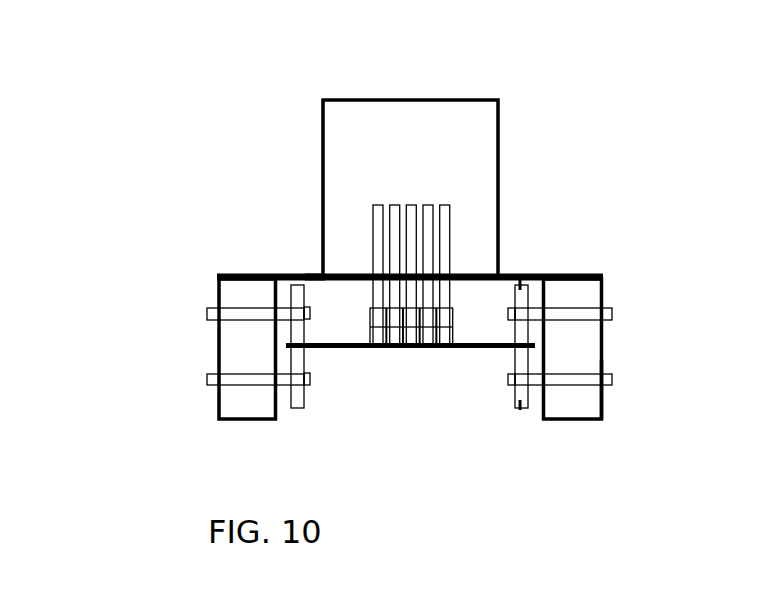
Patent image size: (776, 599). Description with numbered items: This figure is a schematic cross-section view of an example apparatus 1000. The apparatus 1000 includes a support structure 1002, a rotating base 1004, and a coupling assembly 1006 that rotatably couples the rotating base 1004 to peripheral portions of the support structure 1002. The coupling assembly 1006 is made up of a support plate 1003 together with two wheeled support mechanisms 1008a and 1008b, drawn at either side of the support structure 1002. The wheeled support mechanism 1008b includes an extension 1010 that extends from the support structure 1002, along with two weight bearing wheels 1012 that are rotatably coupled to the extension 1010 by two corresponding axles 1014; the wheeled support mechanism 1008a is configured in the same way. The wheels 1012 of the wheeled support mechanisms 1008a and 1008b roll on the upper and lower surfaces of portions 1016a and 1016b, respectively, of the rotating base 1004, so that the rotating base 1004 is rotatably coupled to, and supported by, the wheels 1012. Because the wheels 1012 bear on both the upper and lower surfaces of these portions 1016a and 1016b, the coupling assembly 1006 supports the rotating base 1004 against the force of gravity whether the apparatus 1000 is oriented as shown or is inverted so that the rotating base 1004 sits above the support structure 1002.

The apparatus 1000 is at (285, 72).
The support structure 1002 is at (438, 100).
The support plate 1003 is at (315, 277).
The rotating base 1004 is at (426, 349).
The coupling assembly 1006 is at (606, 234).
The wheeled support mechanism 1008a is at (200, 289).
The wheeled support mechanism 1008b is at (627, 296).
The extension 1010 is at (603, 403).
The weight bearing wheels 1012 is at (520, 290).
The axles 1014 is at (613, 315).
The portion of the rotating base 1016a is at (316, 364).
The portion of the rotating base 1016b is at (492, 360).